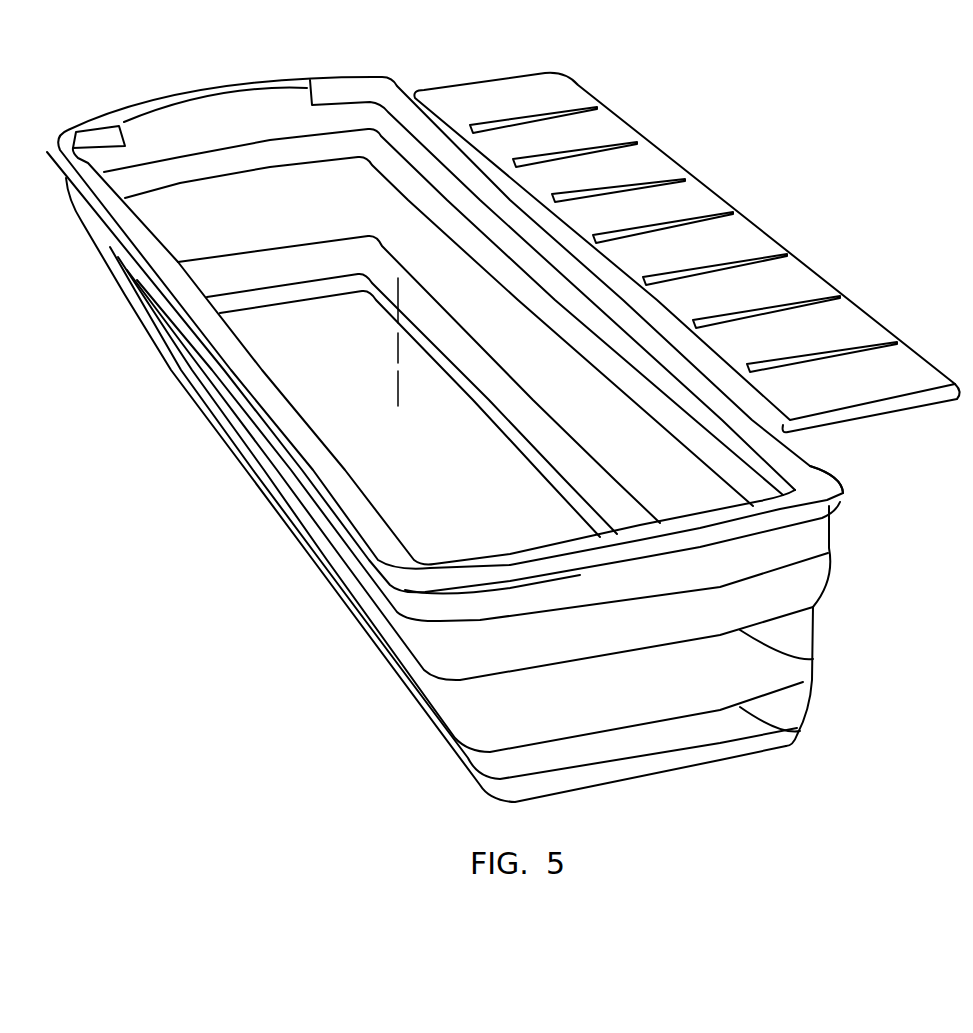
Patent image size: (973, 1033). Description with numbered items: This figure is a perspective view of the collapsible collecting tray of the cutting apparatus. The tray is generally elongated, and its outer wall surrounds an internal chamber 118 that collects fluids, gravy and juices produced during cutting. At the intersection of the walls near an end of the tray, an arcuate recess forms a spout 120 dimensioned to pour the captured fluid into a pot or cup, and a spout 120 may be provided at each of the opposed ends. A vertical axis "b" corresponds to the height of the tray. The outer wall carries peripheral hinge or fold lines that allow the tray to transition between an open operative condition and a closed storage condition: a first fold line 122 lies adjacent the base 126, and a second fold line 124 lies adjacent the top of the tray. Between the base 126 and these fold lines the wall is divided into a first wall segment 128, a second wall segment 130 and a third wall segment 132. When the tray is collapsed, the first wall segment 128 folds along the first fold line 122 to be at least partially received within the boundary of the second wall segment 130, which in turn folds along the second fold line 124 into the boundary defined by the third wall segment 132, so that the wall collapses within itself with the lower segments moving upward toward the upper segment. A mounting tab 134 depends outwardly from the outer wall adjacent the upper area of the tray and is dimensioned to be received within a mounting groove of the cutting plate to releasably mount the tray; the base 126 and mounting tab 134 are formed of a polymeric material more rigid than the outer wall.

The internal chamber 118 is at (274, 230).
The spout 120 is at (81, 135).
The first fold line 122 is at (800, 731).
The second fold line 124 is at (813, 659).
The base 126 is at (446, 453).
The first wall segment 128 is at (653, 755).
The second wall segment 130 is at (640, 705).
The third wall segment 132 is at (627, 639).
The mounting tab 134 is at (699, 256).